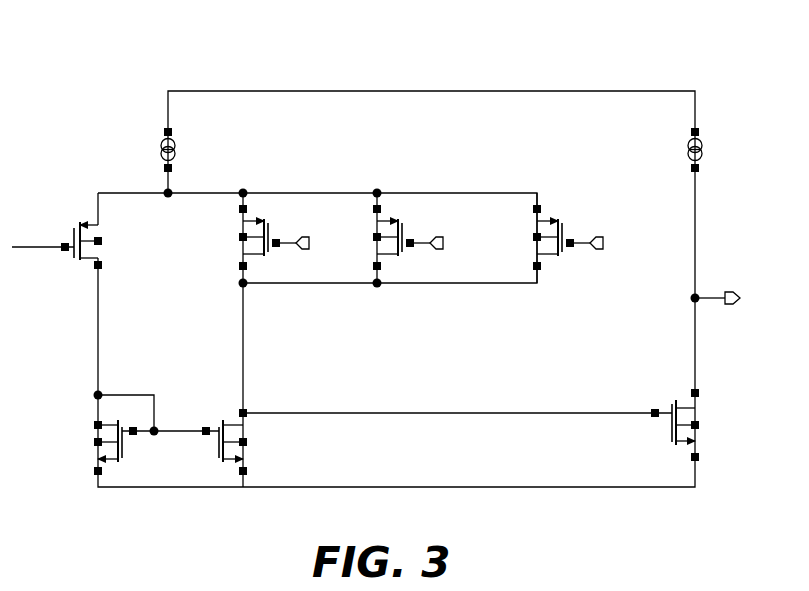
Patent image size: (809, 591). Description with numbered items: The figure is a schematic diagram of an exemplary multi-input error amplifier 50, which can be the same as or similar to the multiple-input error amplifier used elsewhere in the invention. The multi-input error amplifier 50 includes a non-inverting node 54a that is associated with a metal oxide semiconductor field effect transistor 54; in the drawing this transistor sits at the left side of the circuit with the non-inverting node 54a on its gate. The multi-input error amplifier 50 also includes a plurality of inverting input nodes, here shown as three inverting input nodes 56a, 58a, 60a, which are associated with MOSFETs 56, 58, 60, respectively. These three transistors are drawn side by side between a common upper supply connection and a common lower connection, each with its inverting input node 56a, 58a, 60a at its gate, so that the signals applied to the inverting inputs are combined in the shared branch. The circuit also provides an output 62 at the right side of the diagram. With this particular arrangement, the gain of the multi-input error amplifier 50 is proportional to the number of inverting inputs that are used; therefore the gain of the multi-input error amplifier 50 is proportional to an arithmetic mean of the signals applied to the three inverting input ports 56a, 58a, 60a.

The multi-input error amplifier 50 is at (558, 60).
The MOS field effect transistor 54 is at (85, 262).
The non-inverting node 54a is at (64, 245).
The MOSFET 56 is at (266, 237).
The inverting input node 56a is at (278, 248).
The MOSFET 58 is at (400, 237).
The inverting input node 58a is at (412, 248).
The MOSFET 60 is at (560, 237).
The inverting input node 60a is at (572, 250).
The error output 62 is at (732, 290).